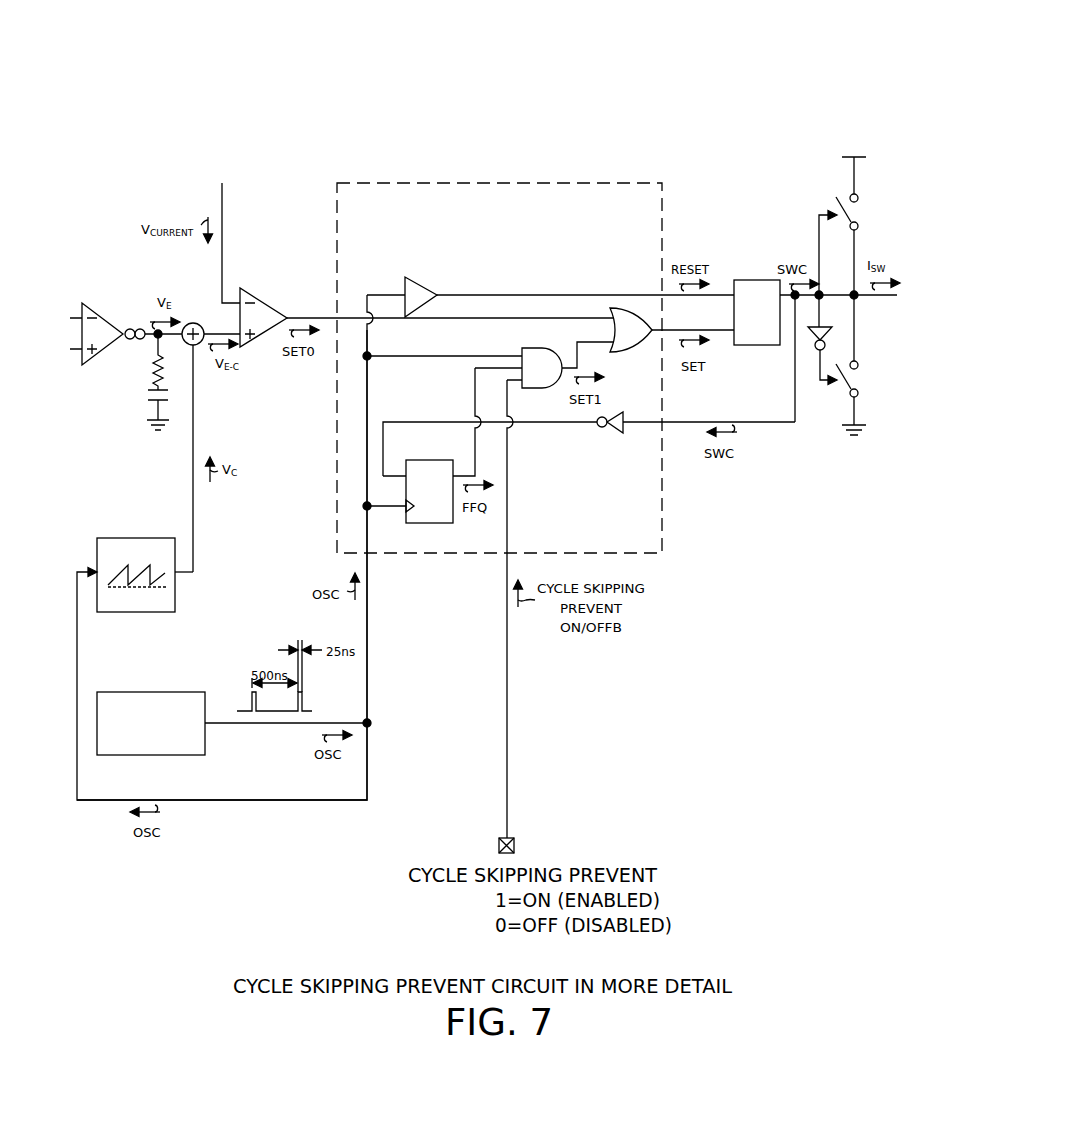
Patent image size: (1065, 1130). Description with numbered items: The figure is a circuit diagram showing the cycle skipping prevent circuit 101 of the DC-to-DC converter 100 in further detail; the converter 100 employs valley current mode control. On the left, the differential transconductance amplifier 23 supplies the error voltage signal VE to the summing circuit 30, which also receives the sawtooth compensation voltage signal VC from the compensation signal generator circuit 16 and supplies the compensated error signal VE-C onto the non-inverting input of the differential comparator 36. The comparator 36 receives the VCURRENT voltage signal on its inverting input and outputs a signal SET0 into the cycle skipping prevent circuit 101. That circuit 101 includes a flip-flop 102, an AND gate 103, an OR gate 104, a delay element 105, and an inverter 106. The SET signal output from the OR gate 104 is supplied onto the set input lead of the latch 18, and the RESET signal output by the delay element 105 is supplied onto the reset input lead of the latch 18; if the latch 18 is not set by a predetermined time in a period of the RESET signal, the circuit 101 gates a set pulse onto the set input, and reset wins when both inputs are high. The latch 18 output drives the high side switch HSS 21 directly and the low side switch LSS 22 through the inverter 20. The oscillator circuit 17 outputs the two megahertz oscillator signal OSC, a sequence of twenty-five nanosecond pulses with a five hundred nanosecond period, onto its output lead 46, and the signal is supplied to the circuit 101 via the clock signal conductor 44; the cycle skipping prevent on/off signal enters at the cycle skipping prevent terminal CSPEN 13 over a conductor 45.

The DC-to-DC converter 100 is at (686, 73).
The cycle skipping prevent circuit 101 is at (507, 182).
The differential transconductance amplifier 23 is at (106, 320).
The summing circuit 30 is at (194, 321).
The differential comparator 36 is at (259, 302).
The delay element 105 is at (423, 279).
The OR gate 104 is at (672, 330).
The AND gate 103 is at (490, 365).
The flip-flop 102 is at (426, 458).
The inverter 106 is at (618, 435).
The cycle skipping prevent on/off signal line 45 is at (506, 778).
The cycle skipping prevent terminal CSPEN 13 is at (515, 846).
The latch 18 is at (756, 279).
The inverter 20 is at (828, 325).
The high side switch HSS 21 is at (864, 249).
The low side switch LSS 22 is at (862, 398).
The compensation signal generator circuit 16 is at (136, 538).
The oscillator circuit 17 is at (151, 690).
The output lead 46 is at (207, 725).
The clock signal conductor 44 is at (369, 628).